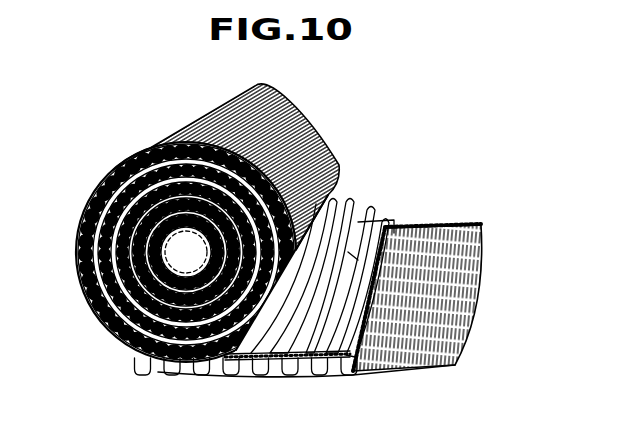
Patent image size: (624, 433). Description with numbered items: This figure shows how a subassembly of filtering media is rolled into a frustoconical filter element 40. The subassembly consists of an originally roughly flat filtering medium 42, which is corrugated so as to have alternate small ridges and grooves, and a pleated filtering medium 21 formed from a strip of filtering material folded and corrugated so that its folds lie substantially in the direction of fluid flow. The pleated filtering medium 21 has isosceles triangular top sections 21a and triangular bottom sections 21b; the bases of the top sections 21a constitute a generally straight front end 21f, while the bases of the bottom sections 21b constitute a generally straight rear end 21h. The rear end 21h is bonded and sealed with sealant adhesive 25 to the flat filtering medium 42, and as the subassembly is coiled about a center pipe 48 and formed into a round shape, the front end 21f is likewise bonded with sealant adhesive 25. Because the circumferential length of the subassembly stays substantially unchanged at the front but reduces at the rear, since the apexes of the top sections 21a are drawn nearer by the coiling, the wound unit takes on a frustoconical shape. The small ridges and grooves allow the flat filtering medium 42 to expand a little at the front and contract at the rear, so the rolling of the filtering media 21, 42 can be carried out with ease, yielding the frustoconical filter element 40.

The frustoconical filter element 40 is at (243, 244).
The center pipe 48 is at (110, 347).
The pleated filtering medium 21 is at (331, 284).
The triangular top sections 21a is at (287, 323).
The triangular bottom sections 21b is at (343, 248).
The front end 21f is at (275, 366).
The rear end 21h is at (375, 207).
The sealant adhesive 25 is at (465, 214).
The originally roughly flat filtering medium 42 is at (452, 300).